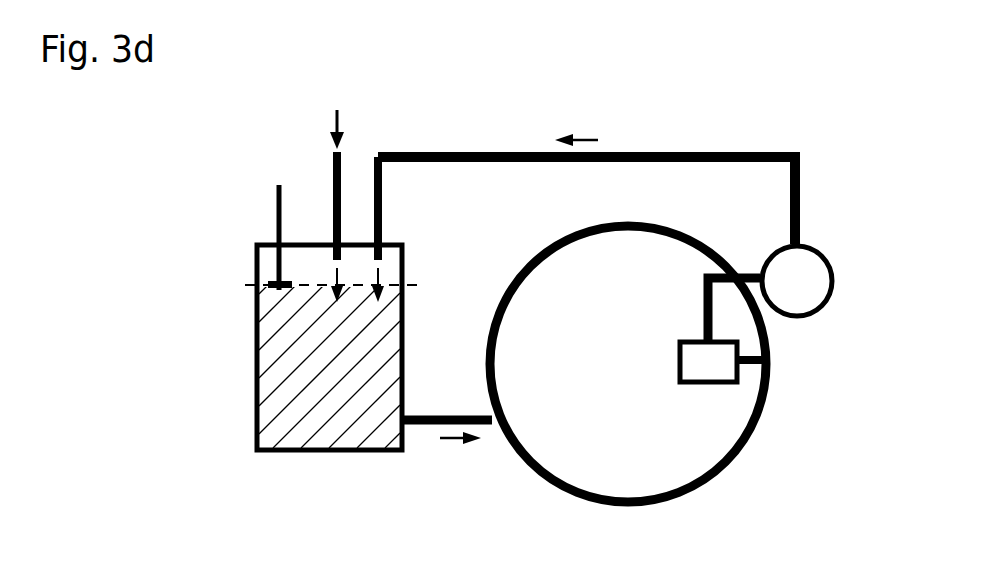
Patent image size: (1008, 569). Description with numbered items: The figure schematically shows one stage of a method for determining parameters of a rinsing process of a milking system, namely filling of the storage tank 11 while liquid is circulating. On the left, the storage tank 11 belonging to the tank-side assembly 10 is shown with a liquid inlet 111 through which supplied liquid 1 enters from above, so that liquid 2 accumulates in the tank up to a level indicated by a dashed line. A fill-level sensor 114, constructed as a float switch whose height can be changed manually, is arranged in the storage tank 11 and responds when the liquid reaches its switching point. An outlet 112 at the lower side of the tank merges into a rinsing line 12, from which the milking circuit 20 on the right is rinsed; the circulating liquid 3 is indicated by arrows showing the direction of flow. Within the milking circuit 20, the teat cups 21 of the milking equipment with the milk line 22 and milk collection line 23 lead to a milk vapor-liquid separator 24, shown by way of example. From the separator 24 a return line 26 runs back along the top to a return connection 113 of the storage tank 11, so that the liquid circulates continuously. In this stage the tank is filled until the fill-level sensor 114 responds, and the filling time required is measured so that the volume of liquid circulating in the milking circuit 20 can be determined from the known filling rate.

The supplied liquid 1 is at (342, 122).
The liquid 2 is at (288, 390).
The liquid circulating in the milking circuit 3 is at (596, 134).
The storage tank unit 10 is at (193, 490).
The storage tank 11 is at (256, 426).
The rinsing line 12 is at (523, 461).
The milking circuit 20 is at (805, 490).
The teat cups 21 is at (679, 356).
The milk line 22 is at (681, 319).
The milk collection line 23 is at (702, 288).
The milk vapor-liquid separator 24 is at (821, 245).
The return line 26 is at (535, 165).
The liquid inlet 111 is at (333, 190).
The outlet 112 is at (405, 414).
The return connection 113 is at (383, 236).
The fill-level sensor 114 is at (274, 281).